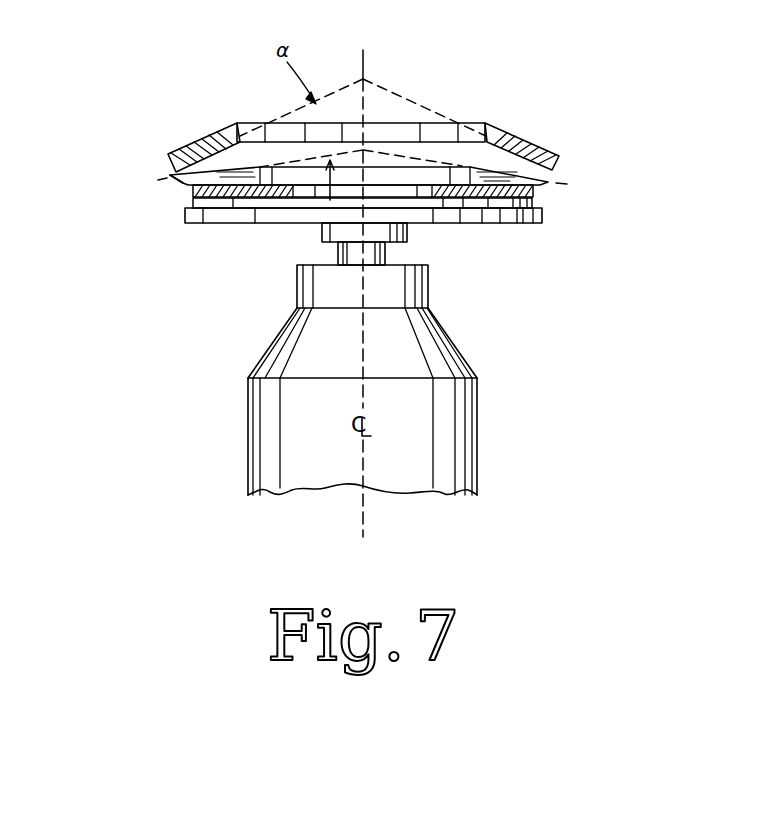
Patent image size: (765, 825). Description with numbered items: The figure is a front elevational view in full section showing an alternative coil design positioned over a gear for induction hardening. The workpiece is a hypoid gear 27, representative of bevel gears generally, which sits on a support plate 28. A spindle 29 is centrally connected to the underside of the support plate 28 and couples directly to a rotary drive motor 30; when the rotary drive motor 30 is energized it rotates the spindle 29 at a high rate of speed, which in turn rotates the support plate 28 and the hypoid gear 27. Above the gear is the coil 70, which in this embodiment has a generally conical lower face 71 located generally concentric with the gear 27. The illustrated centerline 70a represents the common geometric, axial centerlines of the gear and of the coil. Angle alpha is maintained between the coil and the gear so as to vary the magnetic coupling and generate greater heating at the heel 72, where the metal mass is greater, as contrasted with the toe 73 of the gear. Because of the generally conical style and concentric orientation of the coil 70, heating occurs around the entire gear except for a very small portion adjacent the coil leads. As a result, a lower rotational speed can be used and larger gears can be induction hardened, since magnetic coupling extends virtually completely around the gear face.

The coil 70 is at (197, 148).
The centerline 70a is at (367, 272).
The conical lower face 71 is at (200, 170).
The heel 72 is at (178, 178).
The toe 73 is at (257, 177).
The hypoid gear 27 is at (227, 193).
The support plate 28 is at (508, 222).
The spindle 29 is at (387, 252).
The rotary drive motor 30 is at (447, 437).